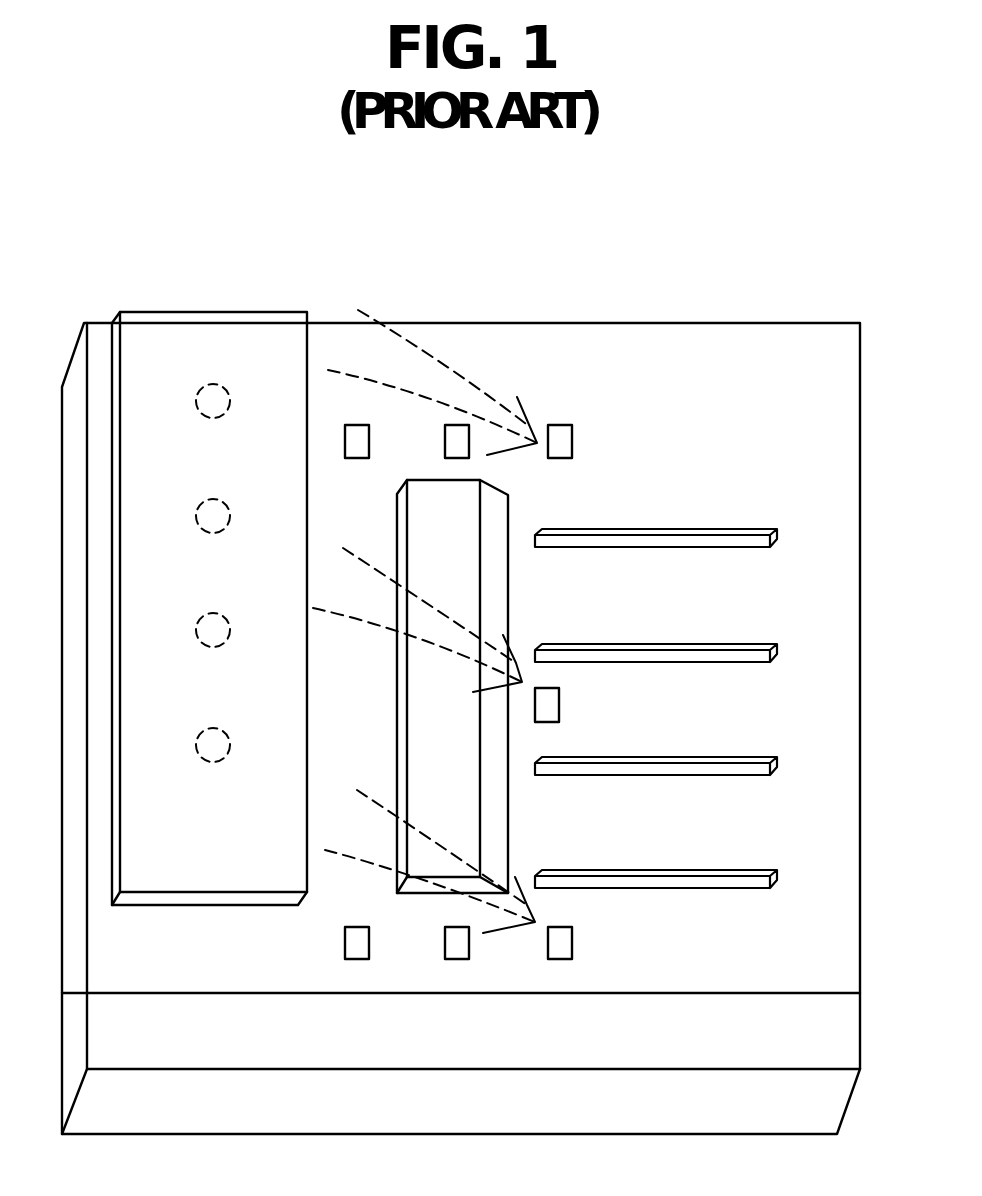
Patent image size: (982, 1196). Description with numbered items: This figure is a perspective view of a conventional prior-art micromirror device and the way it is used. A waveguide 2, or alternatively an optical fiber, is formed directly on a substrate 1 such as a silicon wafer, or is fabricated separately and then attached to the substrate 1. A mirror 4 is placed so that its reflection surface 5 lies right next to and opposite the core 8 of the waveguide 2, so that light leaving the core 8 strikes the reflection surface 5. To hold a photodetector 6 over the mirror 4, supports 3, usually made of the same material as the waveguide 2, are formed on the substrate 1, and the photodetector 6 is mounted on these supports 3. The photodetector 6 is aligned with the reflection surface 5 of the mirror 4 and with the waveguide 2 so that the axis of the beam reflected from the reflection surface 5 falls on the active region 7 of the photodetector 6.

The substrate 1 is at (795, 358).
The waveguide 2 is at (723, 529).
The supports 3 is at (568, 425).
The mirror 4 is at (424, 480).
The reflection surface 5 is at (500, 596).
The photodetector 6 is at (256, 312).
The active region 7 is at (196, 398).
The core 8 is at (538, 764).